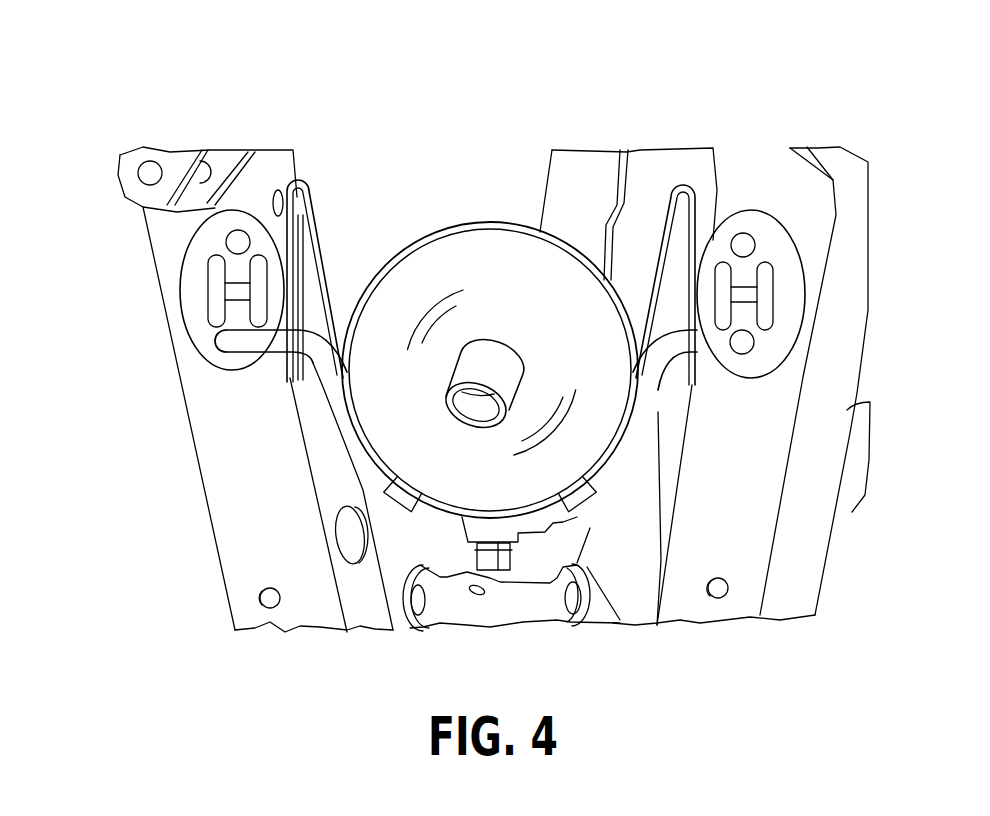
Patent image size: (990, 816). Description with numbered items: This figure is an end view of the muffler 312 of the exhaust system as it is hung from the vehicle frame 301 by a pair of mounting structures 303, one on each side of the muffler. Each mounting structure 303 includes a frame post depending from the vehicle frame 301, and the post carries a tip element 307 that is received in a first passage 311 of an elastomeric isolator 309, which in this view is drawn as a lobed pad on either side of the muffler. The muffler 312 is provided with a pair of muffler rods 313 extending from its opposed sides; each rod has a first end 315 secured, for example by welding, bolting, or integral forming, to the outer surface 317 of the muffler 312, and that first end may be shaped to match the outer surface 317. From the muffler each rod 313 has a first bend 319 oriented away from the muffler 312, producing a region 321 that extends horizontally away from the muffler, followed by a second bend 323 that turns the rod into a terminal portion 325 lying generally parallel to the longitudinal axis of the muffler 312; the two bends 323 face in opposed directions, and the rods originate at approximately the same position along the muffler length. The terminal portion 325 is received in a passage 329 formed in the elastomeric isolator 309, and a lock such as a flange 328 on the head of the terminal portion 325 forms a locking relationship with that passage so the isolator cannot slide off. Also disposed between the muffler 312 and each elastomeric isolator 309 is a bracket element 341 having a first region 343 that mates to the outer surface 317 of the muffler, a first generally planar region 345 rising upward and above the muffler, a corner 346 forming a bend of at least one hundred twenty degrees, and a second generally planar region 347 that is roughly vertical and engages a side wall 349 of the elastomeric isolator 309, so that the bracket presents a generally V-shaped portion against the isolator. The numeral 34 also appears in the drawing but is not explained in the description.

The vehicle frame 301 is at (848, 172).
The mounting structure 303 is at (305, 252).
The tip element 307 is at (228, 228).
The elastomeric isolator 309 is at (188, 297).
The first passage 311 is at (217, 210).
The muffler 312 is at (483, 247).
The muffler rod 313 is at (333, 390).
The first end 315 is at (307, 440).
The outer surface 317 is at (349, 632).
The first bend 319 is at (347, 425).
The region 321 is at (333, 397).
The second bend 323 is at (290, 374).
The terminal portion 325 is at (745, 330).
The flange 328 is at (718, 350).
The passage 329 is at (290, 288).
The spring 34 is at (302, 225).
The bracket element 341 is at (660, 190).
The first region 343 is at (357, 425).
The first generally planar region 345 is at (332, 268).
The corner 346 is at (301, 183).
The second generally planar region 347 is at (262, 205).
The side wall 349 is at (245, 272).